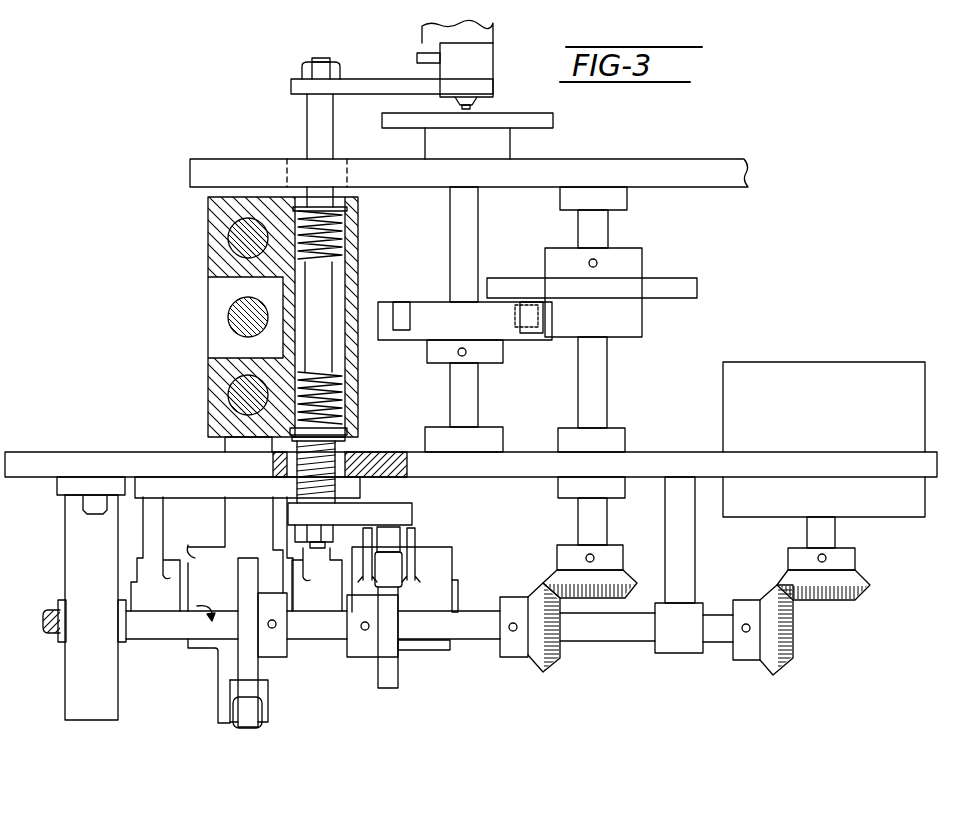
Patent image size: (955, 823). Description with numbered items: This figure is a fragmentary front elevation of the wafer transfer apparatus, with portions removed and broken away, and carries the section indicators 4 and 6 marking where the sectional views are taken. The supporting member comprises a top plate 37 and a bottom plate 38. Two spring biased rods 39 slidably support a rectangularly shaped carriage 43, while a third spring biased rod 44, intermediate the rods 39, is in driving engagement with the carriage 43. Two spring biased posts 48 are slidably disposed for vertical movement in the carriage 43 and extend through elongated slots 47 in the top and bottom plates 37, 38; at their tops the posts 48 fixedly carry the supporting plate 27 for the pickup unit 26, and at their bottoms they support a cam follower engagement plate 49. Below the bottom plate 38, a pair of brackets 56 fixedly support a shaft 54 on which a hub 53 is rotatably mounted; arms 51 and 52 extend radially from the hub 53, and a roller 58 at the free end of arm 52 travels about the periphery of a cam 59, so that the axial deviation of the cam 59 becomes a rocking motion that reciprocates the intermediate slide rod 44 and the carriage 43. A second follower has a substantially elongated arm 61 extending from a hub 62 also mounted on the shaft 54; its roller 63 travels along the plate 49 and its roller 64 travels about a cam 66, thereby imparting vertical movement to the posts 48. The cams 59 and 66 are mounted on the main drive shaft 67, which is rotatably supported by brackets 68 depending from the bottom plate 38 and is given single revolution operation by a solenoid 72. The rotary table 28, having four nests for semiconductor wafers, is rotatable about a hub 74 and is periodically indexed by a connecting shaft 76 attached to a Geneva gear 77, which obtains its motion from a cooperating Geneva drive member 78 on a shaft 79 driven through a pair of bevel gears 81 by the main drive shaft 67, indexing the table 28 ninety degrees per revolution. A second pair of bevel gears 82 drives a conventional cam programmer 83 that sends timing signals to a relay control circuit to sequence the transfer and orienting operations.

The section line 4- 4 is at (250, 150).
The section line 6- 6 is at (127, 402).
The pickup unit 26 is at (536, 59).
The supporting plate 27 is at (292, 88).
The rotary table 28 is at (532, 113).
The top plate 37 is at (718, 160).
The bottom plate 38 is at (870, 455).
The spring biased rods 39 is at (230, 238).
The carriage 43 is at (205, 272).
The spring biased rod 44 is at (240, 312).
The elongated slots 47 is at (305, 165).
The spring biased posts 48 is at (306, 122).
The cam follower engagement plate 49 is at (410, 508).
The arm 51 is at (232, 520).
The arm 52 is at (272, 673).
The hub 53 is at (193, 557).
The shaft 54 is at (50, 608).
The brackets 56 is at (165, 507).
The roller 58 is at (270, 726).
The cam 59 is at (250, 558).
The elongated arm 61 is at (412, 537).
The hub 62 is at (455, 562).
The roller 63 is at (388, 535).
The roller 64 is at (395, 580).
The cam 66 is at (392, 690).
The main drive shaft 67 is at (483, 638).
The brackets 68 is at (697, 557).
The solenoid 72 is at (66, 537).
The hub 74 is at (510, 146).
The connecting shaft 76 is at (450, 245).
The Geneva gear 77 is at (427, 302).
The Geneva drive member 78 is at (688, 278).
The shaft 79 is at (608, 367).
The bevel gears 81 is at (637, 584).
The bevel gears 82 is at (826, 619).
The cam programmer 83 is at (830, 362).